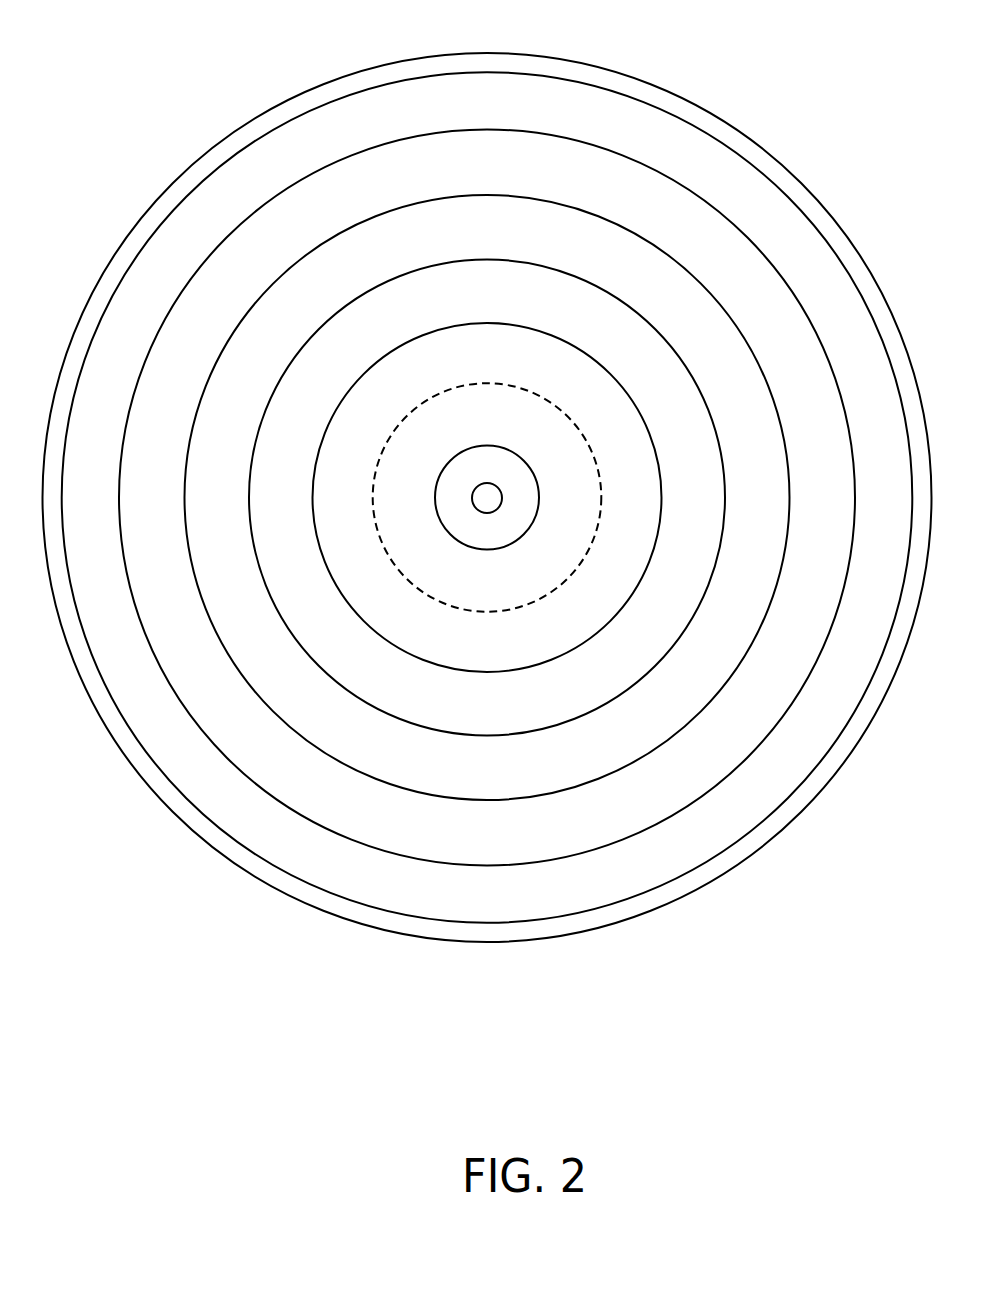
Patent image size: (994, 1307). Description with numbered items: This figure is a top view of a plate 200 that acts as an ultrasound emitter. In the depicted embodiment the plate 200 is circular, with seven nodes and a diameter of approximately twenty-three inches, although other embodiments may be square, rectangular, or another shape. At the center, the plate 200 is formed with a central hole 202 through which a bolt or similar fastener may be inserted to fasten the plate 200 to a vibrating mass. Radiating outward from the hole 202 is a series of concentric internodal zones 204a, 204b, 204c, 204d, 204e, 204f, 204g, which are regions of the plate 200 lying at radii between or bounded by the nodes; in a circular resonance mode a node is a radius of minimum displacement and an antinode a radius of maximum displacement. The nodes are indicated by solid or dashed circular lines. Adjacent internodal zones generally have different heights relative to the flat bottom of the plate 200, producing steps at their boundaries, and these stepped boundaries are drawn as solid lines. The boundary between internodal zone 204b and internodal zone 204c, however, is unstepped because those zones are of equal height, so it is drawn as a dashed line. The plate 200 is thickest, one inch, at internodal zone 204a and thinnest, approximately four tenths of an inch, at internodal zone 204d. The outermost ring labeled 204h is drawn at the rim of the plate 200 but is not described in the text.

The plate 200 is at (173, 70).
The central hole 202 is at (482, 488).
The internodal zone 204a is at (465, 538).
The internodal zone 204b is at (465, 587).
The internodal zone 204c is at (465, 655).
The internodal zone 204d is at (465, 718).
The internodal zone 204e is at (465, 781).
The internodal zone 204f is at (467, 846).
The internodal zone 204g is at (465, 905).
The eighth ring (outer) 204h is at (487, 935).